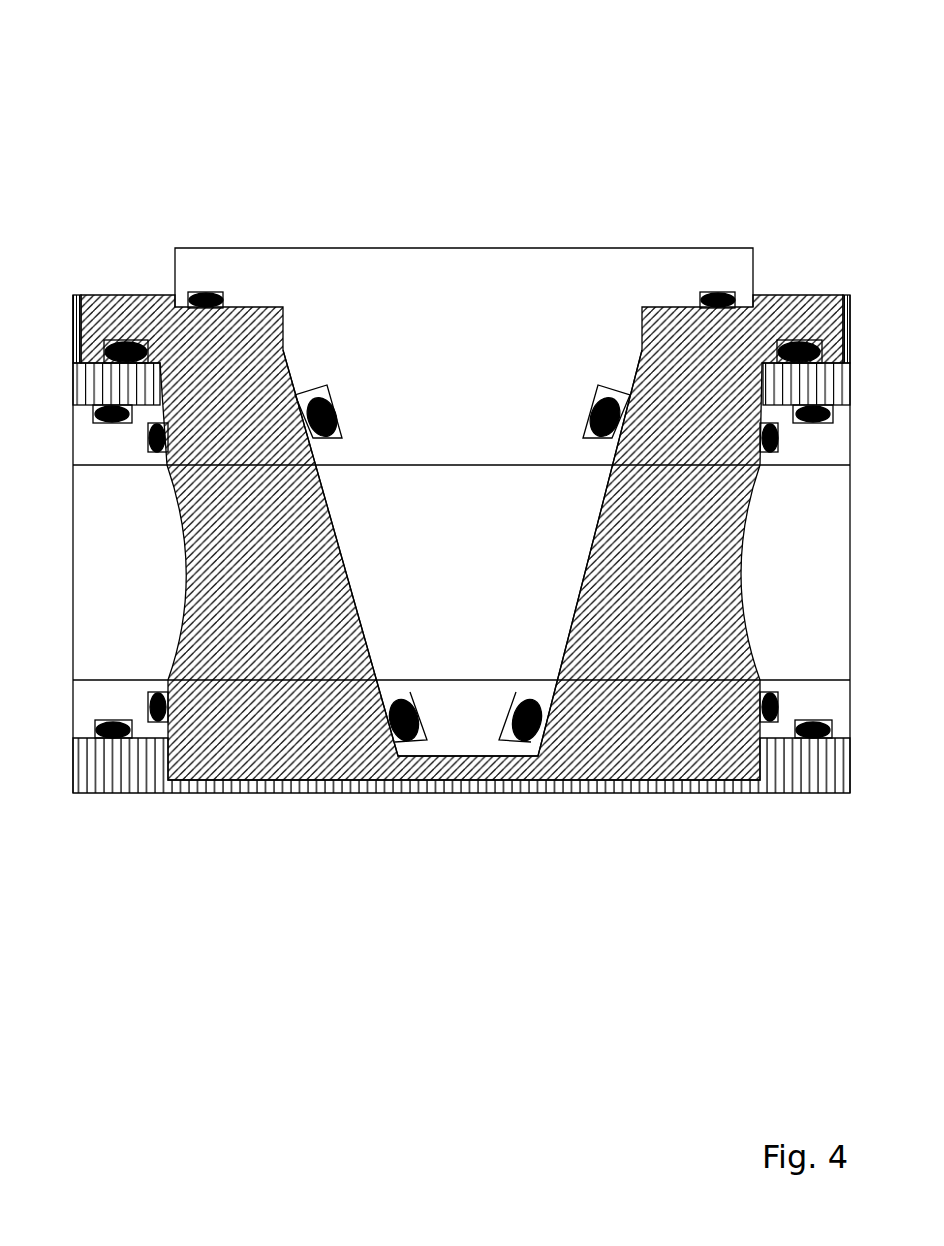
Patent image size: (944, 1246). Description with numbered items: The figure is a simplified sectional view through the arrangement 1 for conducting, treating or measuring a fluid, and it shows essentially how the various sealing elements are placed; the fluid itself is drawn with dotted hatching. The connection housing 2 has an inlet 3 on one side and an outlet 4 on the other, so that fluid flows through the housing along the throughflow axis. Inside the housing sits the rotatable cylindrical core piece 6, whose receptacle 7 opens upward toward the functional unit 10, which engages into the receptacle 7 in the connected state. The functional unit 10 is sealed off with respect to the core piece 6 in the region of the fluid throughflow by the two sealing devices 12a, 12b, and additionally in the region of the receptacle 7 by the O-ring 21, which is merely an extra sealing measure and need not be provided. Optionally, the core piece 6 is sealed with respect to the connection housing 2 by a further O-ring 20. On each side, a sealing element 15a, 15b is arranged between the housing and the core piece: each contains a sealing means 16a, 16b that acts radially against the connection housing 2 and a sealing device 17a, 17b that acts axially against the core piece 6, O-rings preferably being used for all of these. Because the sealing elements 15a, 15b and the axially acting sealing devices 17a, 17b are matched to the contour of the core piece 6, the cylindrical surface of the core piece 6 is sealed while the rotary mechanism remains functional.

The arrangement 1 is at (470, 40).
The connection housing 2 is at (308, 788).
The inlet 3 is at (73, 555).
The outlet 4 is at (850, 575).
The core piece 6 is at (148, 300).
The receptacle 7 is at (598, 507).
The functional unit 10 is at (425, 265).
The sealing device 12a is at (318, 397).
The sealing device 12b is at (612, 397).
The sealing element 15a is at (83, 430).
The sealing element 15b is at (837, 437).
The sealing means 16a is at (110, 738).
The sealing means 16b is at (818, 738).
The sealing device 17a is at (158, 722).
The sealing device 17b is at (768, 722).
The O-ring 20 is at (799, 341).
The O-ring 21 is at (206, 292).